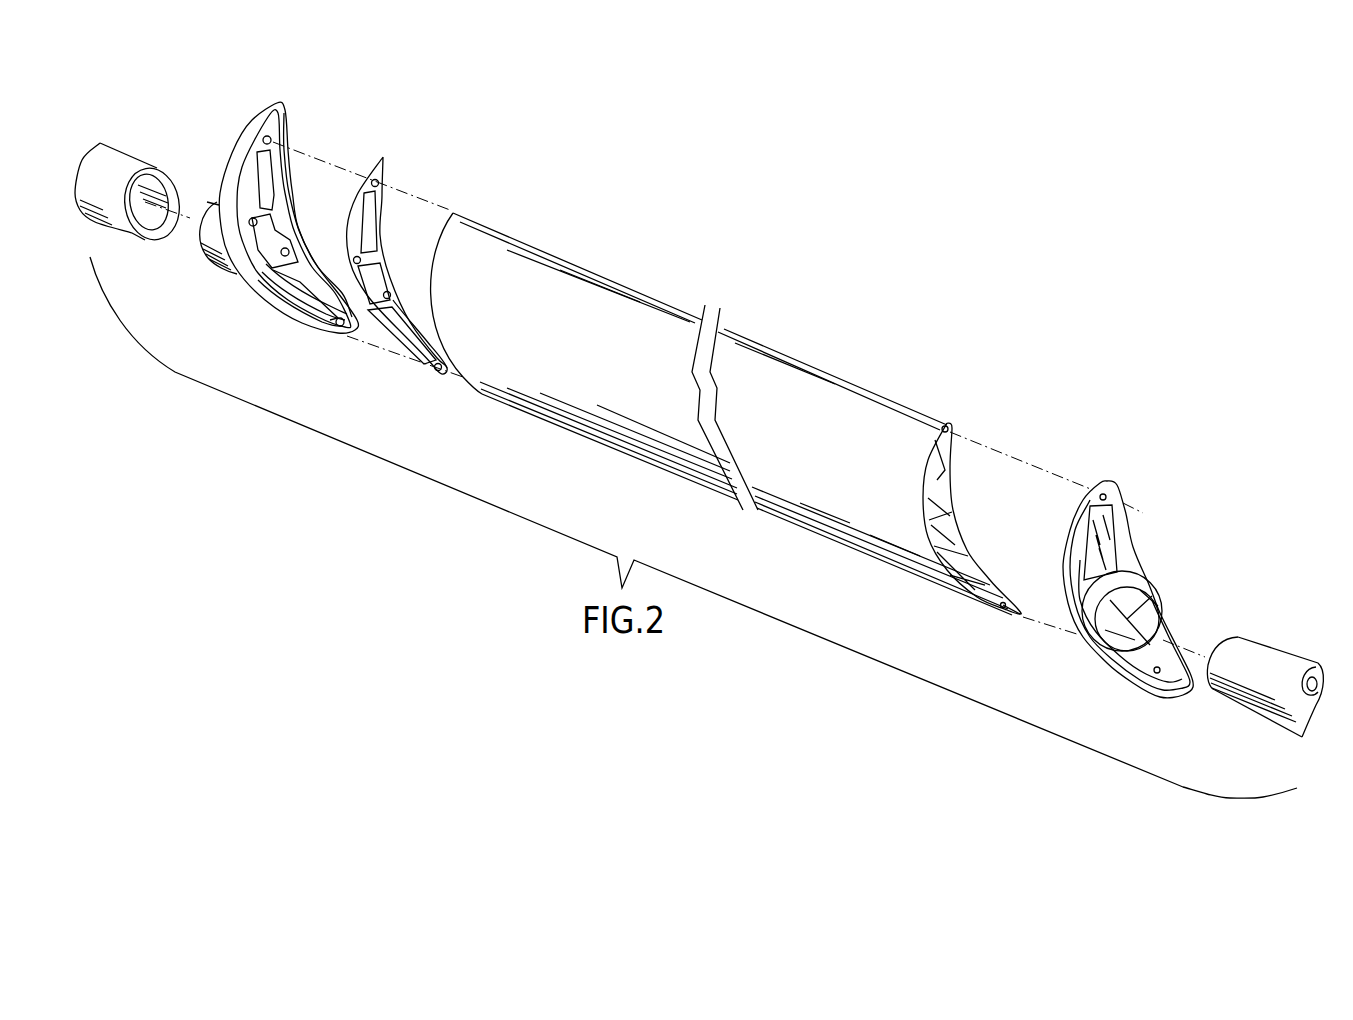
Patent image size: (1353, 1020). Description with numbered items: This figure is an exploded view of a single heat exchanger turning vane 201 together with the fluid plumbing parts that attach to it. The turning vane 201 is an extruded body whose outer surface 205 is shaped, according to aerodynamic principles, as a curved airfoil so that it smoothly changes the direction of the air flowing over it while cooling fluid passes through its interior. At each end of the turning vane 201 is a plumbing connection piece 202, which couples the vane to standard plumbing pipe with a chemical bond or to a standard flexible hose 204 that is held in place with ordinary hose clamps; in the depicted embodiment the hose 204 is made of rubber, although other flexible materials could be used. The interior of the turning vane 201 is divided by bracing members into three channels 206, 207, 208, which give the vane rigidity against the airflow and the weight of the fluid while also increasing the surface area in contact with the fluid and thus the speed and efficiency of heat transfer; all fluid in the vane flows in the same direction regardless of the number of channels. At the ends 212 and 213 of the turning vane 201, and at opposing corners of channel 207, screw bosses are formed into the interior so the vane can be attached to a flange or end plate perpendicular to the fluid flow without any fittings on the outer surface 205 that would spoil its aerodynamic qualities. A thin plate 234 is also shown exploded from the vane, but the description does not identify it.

The heat exchanger turning vane 201 is at (853, 378).
The plumbing connection piece 202 is at (283, 104).
The flexible hose 204 is at (132, 143).
The outer surface 205 is at (553, 340).
The channel 206 is at (943, 487).
The channel 207 is at (953, 533).
The channel 208 is at (977, 583).
The end 212 is at (949, 427).
The end 213 is at (1017, 617).
The thin crescent plate 234 is at (388, 176).